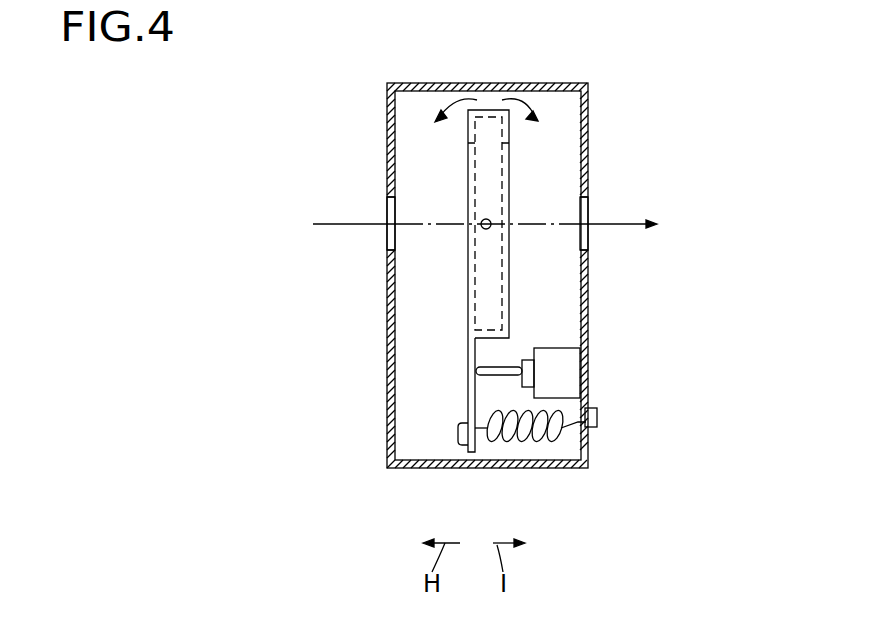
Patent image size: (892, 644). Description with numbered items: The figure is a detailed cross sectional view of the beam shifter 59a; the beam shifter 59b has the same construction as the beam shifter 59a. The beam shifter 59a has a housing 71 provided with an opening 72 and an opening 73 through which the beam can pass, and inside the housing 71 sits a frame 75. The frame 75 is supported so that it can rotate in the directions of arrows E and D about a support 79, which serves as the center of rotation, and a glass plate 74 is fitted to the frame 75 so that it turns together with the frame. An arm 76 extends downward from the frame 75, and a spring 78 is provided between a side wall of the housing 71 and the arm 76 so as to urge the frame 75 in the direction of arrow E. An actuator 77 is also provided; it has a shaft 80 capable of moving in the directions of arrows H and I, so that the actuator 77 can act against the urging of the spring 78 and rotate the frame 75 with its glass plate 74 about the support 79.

The beam shifter 59a is at (512, 70).
The beam shifter 59b is at (485, 275).
The housing 71 is at (590, 137).
The opening 72 is at (386, 237).
The opening 73 is at (585, 248).
The glass plate 74 is at (492, 266).
The frame 75 is at (510, 320).
The arm 76 is at (467, 388).
The actuator 77 is at (565, 369).
The spring 78 is at (546, 440).
The support 79 is at (490, 220).
The shaft 80 is at (489, 368).